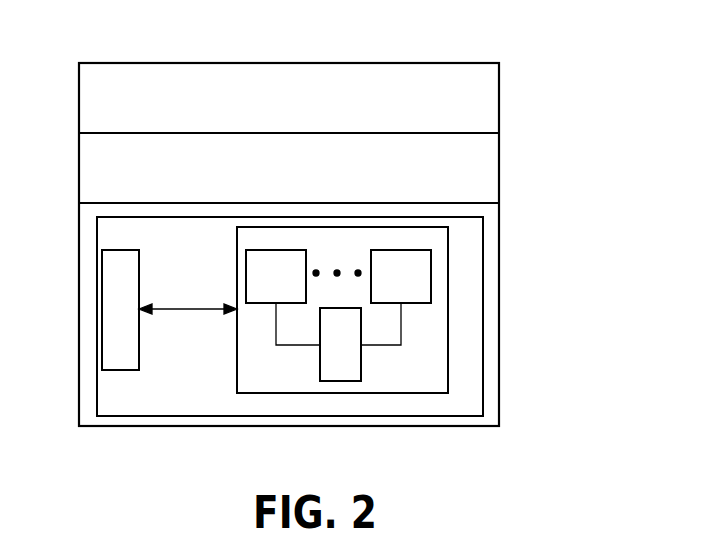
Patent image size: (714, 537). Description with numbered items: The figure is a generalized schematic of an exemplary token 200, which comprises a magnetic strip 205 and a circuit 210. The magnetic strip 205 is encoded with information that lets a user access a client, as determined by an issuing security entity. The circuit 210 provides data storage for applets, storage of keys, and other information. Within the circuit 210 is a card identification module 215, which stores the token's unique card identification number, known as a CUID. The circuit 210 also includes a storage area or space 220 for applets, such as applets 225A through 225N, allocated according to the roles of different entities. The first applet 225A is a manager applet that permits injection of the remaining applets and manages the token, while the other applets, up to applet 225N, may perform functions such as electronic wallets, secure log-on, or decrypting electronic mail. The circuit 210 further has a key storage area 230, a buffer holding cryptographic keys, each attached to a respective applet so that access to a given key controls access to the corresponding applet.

The token 200 is at (290, 63).
The magnetic strip 205 is at (493, 154).
The circuit 210 is at (97, 218).
The card identification module 215 is at (120, 297).
The storage area for applets 220 is at (449, 322).
The first applet 225A is at (298, 288).
The applet 225N is at (421, 288).
The key storage area 230 is at (361, 363).